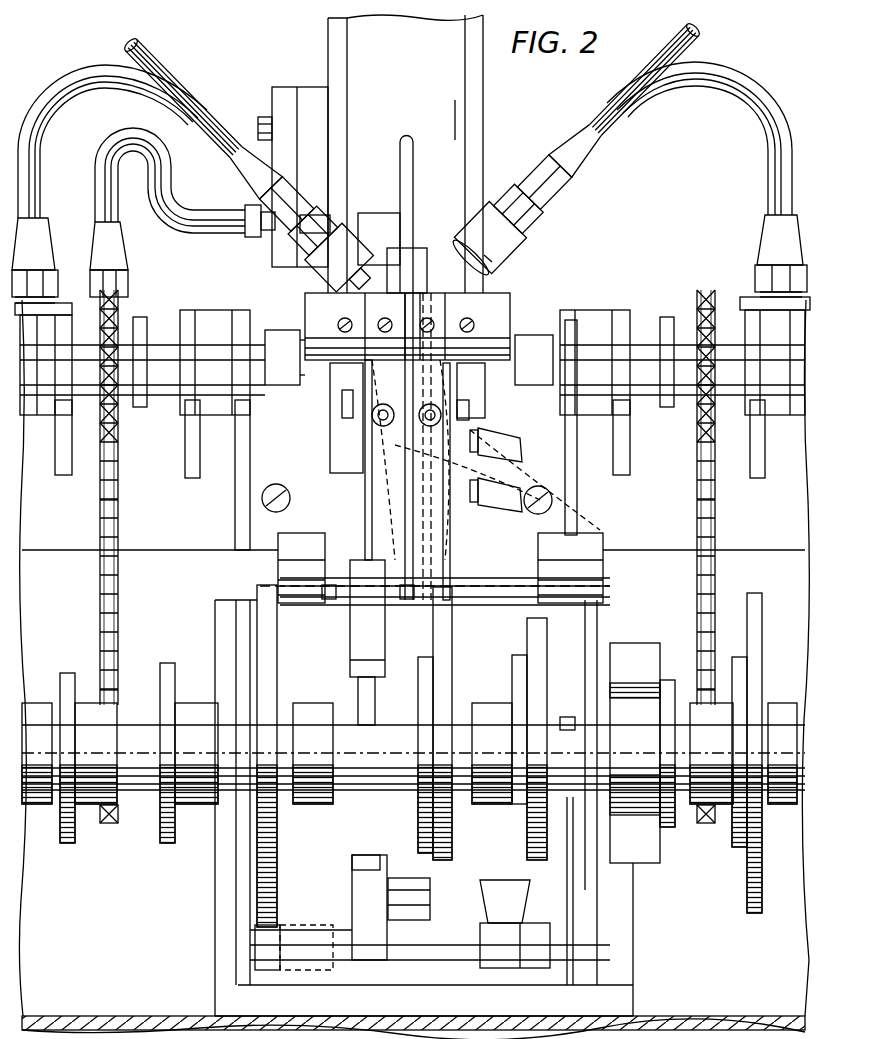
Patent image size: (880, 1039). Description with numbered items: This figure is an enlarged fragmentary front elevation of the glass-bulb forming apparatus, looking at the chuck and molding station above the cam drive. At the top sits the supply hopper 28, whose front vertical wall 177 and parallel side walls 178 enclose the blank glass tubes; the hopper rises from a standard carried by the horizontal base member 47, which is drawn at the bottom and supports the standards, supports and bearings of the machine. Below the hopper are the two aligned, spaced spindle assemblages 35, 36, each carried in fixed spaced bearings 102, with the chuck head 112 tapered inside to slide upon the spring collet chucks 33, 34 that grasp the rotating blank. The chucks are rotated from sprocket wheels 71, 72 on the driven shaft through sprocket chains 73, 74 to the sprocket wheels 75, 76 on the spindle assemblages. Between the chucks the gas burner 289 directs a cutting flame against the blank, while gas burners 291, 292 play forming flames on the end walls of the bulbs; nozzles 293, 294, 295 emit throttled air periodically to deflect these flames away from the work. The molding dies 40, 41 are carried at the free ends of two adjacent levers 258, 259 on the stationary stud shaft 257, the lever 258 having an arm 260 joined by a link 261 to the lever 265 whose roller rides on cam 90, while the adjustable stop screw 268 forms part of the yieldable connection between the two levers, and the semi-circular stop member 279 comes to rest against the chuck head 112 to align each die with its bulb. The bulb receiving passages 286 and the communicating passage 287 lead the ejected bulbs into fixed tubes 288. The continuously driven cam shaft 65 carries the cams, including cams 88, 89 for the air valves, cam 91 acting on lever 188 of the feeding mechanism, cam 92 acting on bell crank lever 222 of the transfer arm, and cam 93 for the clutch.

The hopper 28 is at (493, 72).
The side walls 178 is at (335, 60).
The front vertical wall 177 is at (453, 135).
The bearings 102 is at (68, 292).
The gas burner 291 is at (325, 215).
The nozzle 293 is at (378, 217).
The nozzle 294 is at (345, 275).
The gas burner 292 is at (482, 184).
The nozzle 295 is at (485, 265).
The gas burner 289 is at (418, 232).
The die 40 is at (382, 274).
The die 41 is at (441, 283).
The stop member 279 is at (305, 299).
The spindle assemblage 35 is at (279, 325).
The spindle assemblage 36 is at (549, 327).
The chuck head 112 is at (295, 390).
The chuck 33 is at (335, 384).
The chuck 34 is at (482, 384).
The bulb receiving passages 286 is at (490, 383).
The adjustable stop screw 268 is at (500, 431).
The fixed tubes 288 is at (505, 449).
The lever 259 is at (527, 544).
The lever 258 is at (372, 533).
The stud shaft 257 is at (603, 537).
The passage 287 is at (462, 539).
The arm 260 is at (333, 606).
The link 261 is at (352, 646).
The sprocket wheel 75 is at (118, 428).
The sprocket chain 73 is at (118, 523).
The sprocket wheel 71 is at (118, 690).
The sprocket wheel 76 is at (697, 422).
The sprocket chain 74 is at (697, 511).
The sprocket wheel 72 is at (697, 686).
The cam shaft 65 is at (598, 722).
The cam 88 is at (75, 837).
The cam 89 is at (175, 837).
The cam 90 is at (277, 861).
The cam 91 is at (435, 860).
The cam 92 is at (530, 858).
The cam 93 is at (747, 860).
The lever 265 is at (370, 883).
The lever 188 is at (420, 919).
The bell crank lever 222 is at (520, 904).
The base member 47 is at (677, 1018).